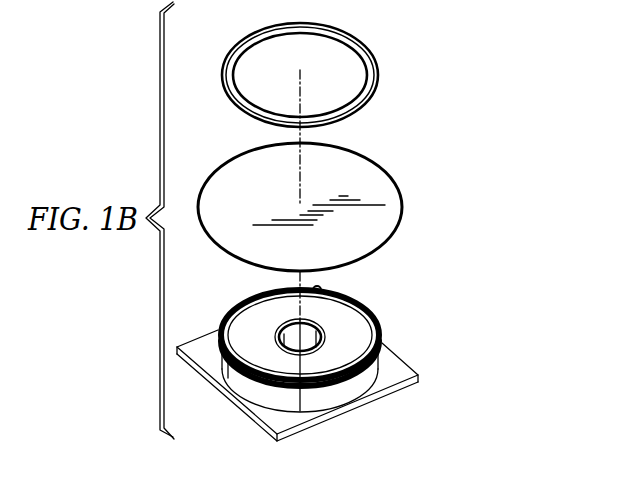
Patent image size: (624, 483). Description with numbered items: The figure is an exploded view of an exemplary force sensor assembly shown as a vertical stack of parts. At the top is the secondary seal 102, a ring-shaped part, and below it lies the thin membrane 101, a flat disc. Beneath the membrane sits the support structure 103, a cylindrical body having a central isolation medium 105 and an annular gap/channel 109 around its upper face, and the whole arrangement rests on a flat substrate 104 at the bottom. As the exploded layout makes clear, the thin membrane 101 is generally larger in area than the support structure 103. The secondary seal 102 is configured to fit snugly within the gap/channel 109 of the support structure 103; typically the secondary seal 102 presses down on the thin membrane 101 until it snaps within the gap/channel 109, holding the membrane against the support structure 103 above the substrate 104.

The thin membrane 101 is at (347, 152).
The secondary seal 102 is at (343, 33).
The support structure 103 is at (352, 325).
The substrate 104 is at (388, 396).
The isolation medium 105 is at (307, 330).
The gap/channel 109 is at (372, 346).